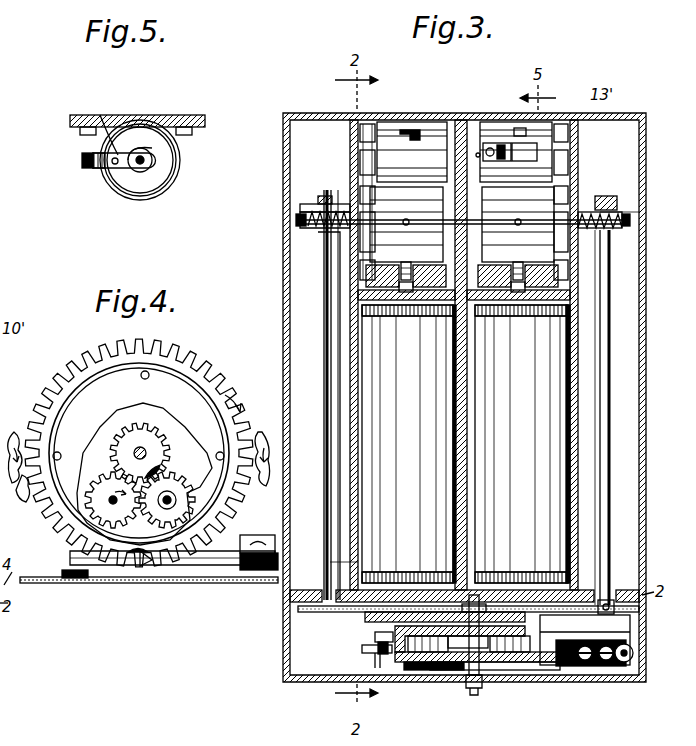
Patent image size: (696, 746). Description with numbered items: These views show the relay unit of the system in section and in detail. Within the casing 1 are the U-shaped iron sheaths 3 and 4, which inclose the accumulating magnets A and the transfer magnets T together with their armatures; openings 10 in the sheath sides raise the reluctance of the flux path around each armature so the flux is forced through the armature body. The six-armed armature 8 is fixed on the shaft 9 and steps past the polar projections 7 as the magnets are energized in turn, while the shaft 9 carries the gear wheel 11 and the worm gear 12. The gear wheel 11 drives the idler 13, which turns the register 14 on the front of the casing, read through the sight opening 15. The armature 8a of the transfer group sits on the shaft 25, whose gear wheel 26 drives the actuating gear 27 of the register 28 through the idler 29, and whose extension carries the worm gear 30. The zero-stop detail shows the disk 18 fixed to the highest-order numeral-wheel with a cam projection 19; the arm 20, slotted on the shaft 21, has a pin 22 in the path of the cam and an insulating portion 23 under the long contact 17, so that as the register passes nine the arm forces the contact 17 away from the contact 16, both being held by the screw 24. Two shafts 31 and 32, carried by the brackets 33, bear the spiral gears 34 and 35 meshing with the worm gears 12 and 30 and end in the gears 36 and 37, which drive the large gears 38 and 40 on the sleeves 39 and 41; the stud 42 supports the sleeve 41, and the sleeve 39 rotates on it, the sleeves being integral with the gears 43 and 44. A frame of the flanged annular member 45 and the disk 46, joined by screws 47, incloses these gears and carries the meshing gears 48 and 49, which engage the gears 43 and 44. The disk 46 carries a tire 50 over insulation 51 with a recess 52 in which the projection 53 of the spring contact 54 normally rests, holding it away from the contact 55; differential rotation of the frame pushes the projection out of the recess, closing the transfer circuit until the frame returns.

In FIG. 3, the casing 1 is at (643, 470).
In FIG. 3, the magnetic sheath 3 is at (570, 542).
In FIG. 3, the magnetic sheath 4 is at (350, 540).
In FIG. 3, the polar projection 7 is at (560, 270).
In FIG. 3, the armature 8 is at (398, 228).
In FIG. 3, the armature 8a is at (540, 193).
In FIG. 3, the shaft 9 is at (568, 210).
In FIG. 3, the opening 10 is at (338, 280).
In FIG. 3, the gear wheel 11 is at (598, 242).
In FIG. 3, the worm gear 12 is at (626, 222).
In FIG. 3, the idler 13 is at (578, 160).
In FIG. 3, the register 14 is at (495, 143).
In FIG. 5, the sight opening 15 is at (145, 125).
In FIG. 3, the contact 16 is at (480, 152).
In FIG. 5, the contact 16 is at (95, 150).
In FIG. 3, the long contact 17 is at (525, 143).
In FIG. 5, the long contact 17 is at (96, 168).
In FIG. 5, the disk 18 is at (160, 185).
In FIG. 5, the cam projection 19 is at (126, 120).
In FIG. 5, the arm 20 is at (140, 197).
In FIG. 5, the shaft 21 is at (152, 154).
In FIG. 5, the pin 22 is at (152, 193).
In FIG. 3, the insulating portion 23 is at (490, 140).
In FIG. 5, the insulating portion 23 is at (110, 168).
In FIG. 3, the screw 24 is at (486, 125).
In FIG. 5, the screw 24 is at (80, 162).
In FIG. 3, the shaft 25 is at (370, 205).
In FIG. 3, the gear wheel 26 is at (324, 250).
In FIG. 3, the actuating gear 27 is at (350, 133).
In FIG. 3, the register 28 is at (427, 150).
In FIG. 3, the idler 29 is at (360, 165).
In FIG. 3, the worm gear 30 is at (300, 207).
In FIG. 3, the shaft 31 is at (604, 330).
In FIG. 3, the shaft 32 is at (324, 322).
In FIG. 3, the bracket 33 is at (318, 200).
In FIG. 3, the spiral gear 34 is at (622, 218).
In FIG. 3, the spiral gear 35 is at (296, 222).
In FIG. 3, the gear 36 is at (625, 628).
In FIG. 4, the gear 36 is at (265, 478).
In FIG. 3, the gear 37 is at (318, 602).
In FIG. 4, the gear 37 is at (20, 482).
In FIG. 3, the large gear 38 is at (620, 622).
In FIG. 4, the large gear 38 is at (232, 392).
In FIG. 3, the sleeve 39 is at (505, 662).
In FIG. 3, the large gear 40 is at (372, 622).
In FIG. 4, the large gear 40 is at (30, 430).
In FIG. 3, the sleeve 41 is at (455, 662).
In FIG. 3, the stud 42 is at (474, 690).
In FIG. 4, the stud 42 is at (136, 450).
In FIG. 3, the gear 43 is at (510, 666).
In FIG. 4, the gear 43 is at (166, 460).
In FIG. 3, the gear 44 is at (425, 662).
In FIG. 4, the gear 44 is at (144, 432).
In FIG. 3, the flanged annular member 45 is at (398, 636).
In FIG. 3, the disk 46 is at (383, 654).
In FIG. 4, the disk 46 is at (128, 365).
In FIG. 3, the screw 47 is at (372, 660).
In FIG. 4, the screw 47 is at (149, 375).
In FIG. 3, the gear 48 is at (560, 666).
In FIG. 4, the gear 48 is at (186, 488).
In FIG. 3, the gear 49 is at (420, 670).
In FIG. 4, the gear 49 is at (108, 490).
In FIG. 4, the rim or tire 50 is at (100, 366).
In FIG. 4, the insulation 51 is at (118, 368).
In FIG. 4, the recess 52 is at (136, 556).
In FIG. 4, the projection 53 is at (147, 560).
In FIG. 3, the spring contact 54 is at (600, 665).
In FIG. 4, the spring contact 54 is at (220, 566).
In FIG. 4, the contact 55 is at (228, 583).